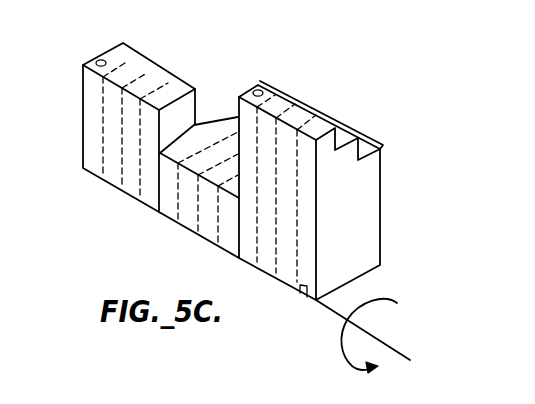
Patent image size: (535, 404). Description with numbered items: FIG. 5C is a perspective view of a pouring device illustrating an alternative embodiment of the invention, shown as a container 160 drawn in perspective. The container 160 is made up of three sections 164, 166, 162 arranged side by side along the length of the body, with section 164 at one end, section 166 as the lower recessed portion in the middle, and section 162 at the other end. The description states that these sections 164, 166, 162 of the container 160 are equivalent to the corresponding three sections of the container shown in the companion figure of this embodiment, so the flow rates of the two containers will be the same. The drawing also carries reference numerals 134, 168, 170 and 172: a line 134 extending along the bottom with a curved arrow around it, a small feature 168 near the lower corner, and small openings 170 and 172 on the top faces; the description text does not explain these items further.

The axis of rotation 134 is at (343, 352).
The container 160 is at (116, 212).
The section 162 is at (313, 113).
The section 164 is at (122, 60).
The section 166 is at (219, 130).
The notch 168 is at (303, 297).
The hole 170 is at (264, 93).
The hole 172 is at (96, 64).